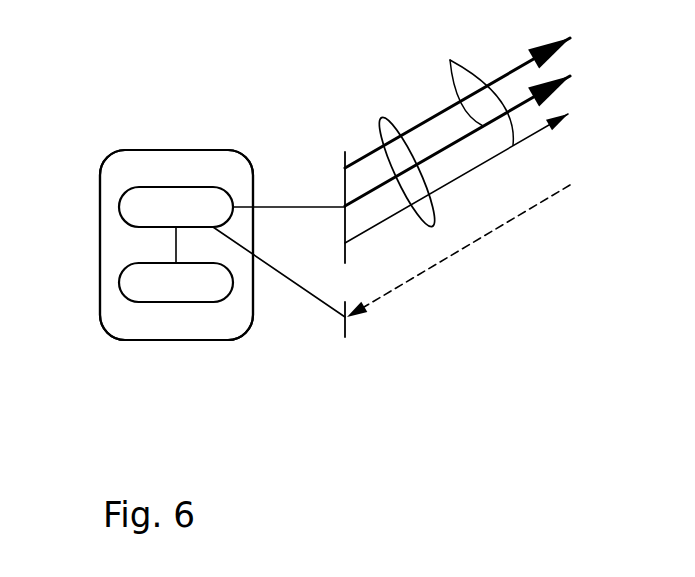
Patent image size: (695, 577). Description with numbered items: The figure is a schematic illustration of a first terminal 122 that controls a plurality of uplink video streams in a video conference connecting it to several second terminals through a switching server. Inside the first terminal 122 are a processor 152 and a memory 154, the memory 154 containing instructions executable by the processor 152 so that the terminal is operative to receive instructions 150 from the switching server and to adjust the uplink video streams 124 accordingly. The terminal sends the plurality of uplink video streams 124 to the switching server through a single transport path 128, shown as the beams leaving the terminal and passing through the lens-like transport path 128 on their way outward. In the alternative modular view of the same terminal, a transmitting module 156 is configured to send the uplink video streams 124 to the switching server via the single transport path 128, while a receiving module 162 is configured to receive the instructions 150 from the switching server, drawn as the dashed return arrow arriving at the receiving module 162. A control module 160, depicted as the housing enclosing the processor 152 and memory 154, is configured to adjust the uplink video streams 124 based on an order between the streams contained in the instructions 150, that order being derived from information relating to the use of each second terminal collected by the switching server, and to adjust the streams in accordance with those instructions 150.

The first terminal 122 is at (243, 371).
The uplink video streams 124 is at (457, 140).
The single transport path 128 is at (383, 118).
The instructions 150 is at (540, 207).
The processor 152 is at (124, 228).
The memory 154 is at (128, 301).
The transmitting module 156 is at (342, 178).
The control module 160 is at (149, 161).
The receiving module 162 is at (347, 325).